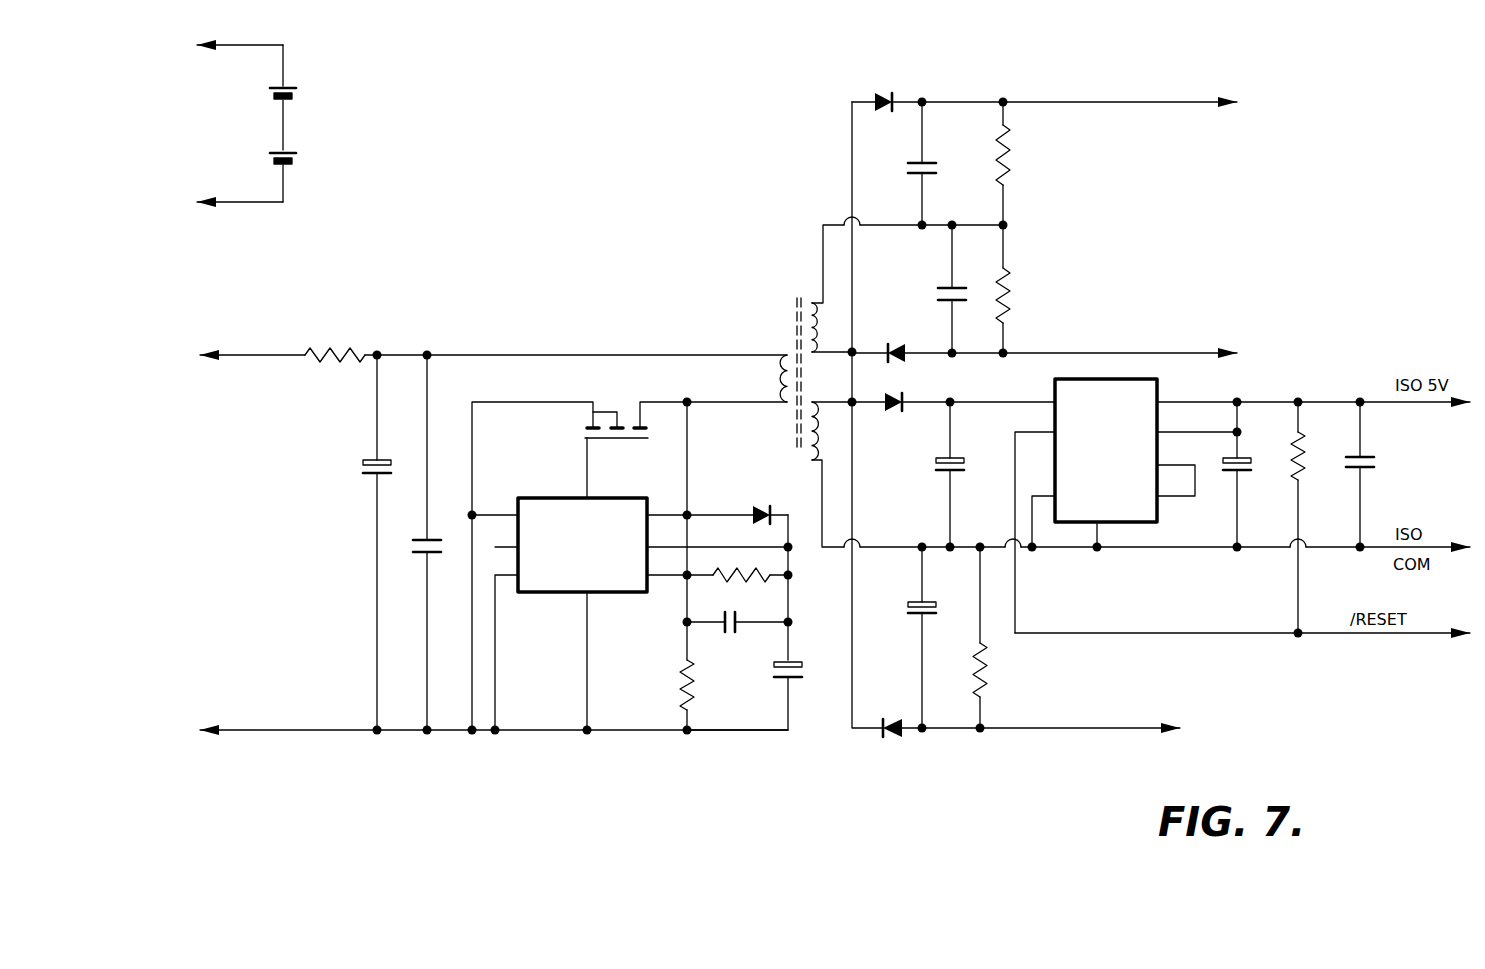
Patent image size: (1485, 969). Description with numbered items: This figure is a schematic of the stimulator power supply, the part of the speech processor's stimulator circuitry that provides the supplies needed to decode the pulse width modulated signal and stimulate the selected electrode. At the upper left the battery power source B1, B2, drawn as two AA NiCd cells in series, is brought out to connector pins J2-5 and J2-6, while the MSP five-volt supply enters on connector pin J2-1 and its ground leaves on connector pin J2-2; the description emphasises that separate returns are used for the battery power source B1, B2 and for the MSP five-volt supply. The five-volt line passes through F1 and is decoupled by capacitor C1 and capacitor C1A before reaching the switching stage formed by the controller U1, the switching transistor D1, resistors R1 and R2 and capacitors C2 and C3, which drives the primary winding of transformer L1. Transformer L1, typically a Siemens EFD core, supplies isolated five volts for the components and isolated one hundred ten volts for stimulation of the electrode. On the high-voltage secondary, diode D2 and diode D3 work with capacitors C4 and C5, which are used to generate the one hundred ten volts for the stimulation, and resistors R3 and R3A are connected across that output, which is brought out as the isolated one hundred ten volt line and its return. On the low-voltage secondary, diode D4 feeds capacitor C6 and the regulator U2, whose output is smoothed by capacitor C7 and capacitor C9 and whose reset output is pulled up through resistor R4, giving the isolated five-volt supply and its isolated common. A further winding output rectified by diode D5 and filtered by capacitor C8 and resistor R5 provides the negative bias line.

The connector J2 pin 5 (battery B+) J2-5 is at (204, 41).
The connector J2 pin 6 (battery B-) J2-6 is at (204, 213).
The connector J2 pin 1 (MSP 5V) J2-1 is at (215, 359).
The connector J2 pin 2 (MSP GND) J2-2 is at (457, 734).
The battery power source B1 is at (282, 97).
The battery power source B2 is at (315, 176).
The fuse/resistor F1 10R F1 is at (335, 353).
The capacitor C1 470uF C1 is at (358, 542).
The capacitor C1A 0.1uF C1A is at (424, 542).
The MOSFET D1 IRFR024 and diode D1 BYD33D D1 is at (642, 473).
The switching regulator U1 MAX641 U1 is at (557, 602).
The resistor R1 100K R1 is at (749, 576).
The resistor R2 27K R2 is at (663, 690).
The capacitor C3 660p C3 is at (737, 632).
The capacitor C2 0.47uF Ta C2 is at (759, 685).
The transformer L1 is at (883, 382).
The diode D2 BYD33D D2 is at (1043, 101).
The capacitor C4 is at (938, 163).
The resistor R3 10M R3 is at (1024, 163).
The capacitor C5 is at (937, 289).
The resistor R3A 10M R3A is at (1023, 289).
The diode D3 BYD33D D3 is at (1044, 351).
The diode D4 BYD33D D4 is at (953, 402).
The capacitor C6 10uF Ta C6 is at (937, 474).
The capacitor C8 10uF Ta C8 is at (910, 637).
The resistor R5 100K R5 is at (1004, 637).
The diode D5 BYD33D D5 is at (1018, 724).
The voltage regulator U2 LP2951 U2 is at (1128, 532).
The capacitor C7 10uF Ta C7 is at (1230, 474).
The resistor R4 100K R4 is at (1318, 517).
The capacitor C9 0.1uF C9 is at (1375, 474).